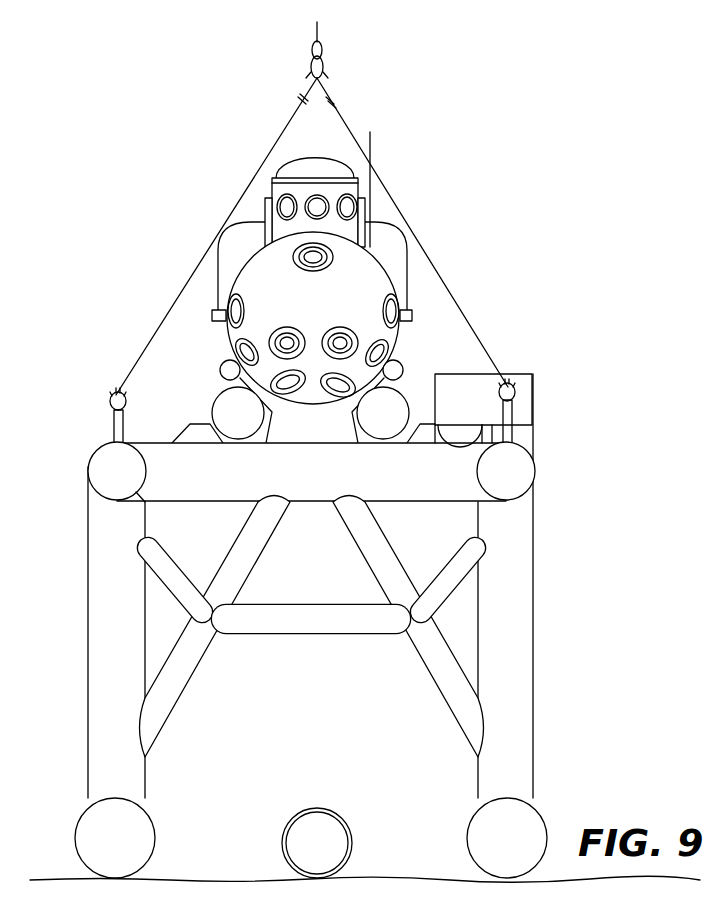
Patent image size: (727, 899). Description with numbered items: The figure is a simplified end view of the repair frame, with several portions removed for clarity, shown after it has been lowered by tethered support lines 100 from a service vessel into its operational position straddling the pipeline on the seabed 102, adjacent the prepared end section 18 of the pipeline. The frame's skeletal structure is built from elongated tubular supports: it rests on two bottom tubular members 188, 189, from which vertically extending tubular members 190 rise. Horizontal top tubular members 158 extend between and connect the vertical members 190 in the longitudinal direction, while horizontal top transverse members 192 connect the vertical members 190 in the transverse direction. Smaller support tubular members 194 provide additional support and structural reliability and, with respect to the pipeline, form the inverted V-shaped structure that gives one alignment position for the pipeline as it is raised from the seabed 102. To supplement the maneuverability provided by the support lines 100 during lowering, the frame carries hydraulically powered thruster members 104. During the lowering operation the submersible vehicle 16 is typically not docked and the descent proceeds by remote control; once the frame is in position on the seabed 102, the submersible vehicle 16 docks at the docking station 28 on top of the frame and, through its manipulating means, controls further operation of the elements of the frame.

The submersible vehicle 16 is at (394, 286).
The prepared end section 18 is at (350, 834).
The docking station 28 is at (325, 445).
The support lines 100 is at (222, 218).
The seabed 102 is at (437, 878).
The thruster members 104 is at (517, 373).
The horizontal top tubular members 158 is at (92, 464).
The tubular member 188 is at (154, 836).
The tubular member 189 is at (547, 836).
The vertically extending tubular members 190 is at (88, 688).
The horizontal top transverse members 192 is at (461, 502).
The smaller support tubular members 194 is at (368, 562).